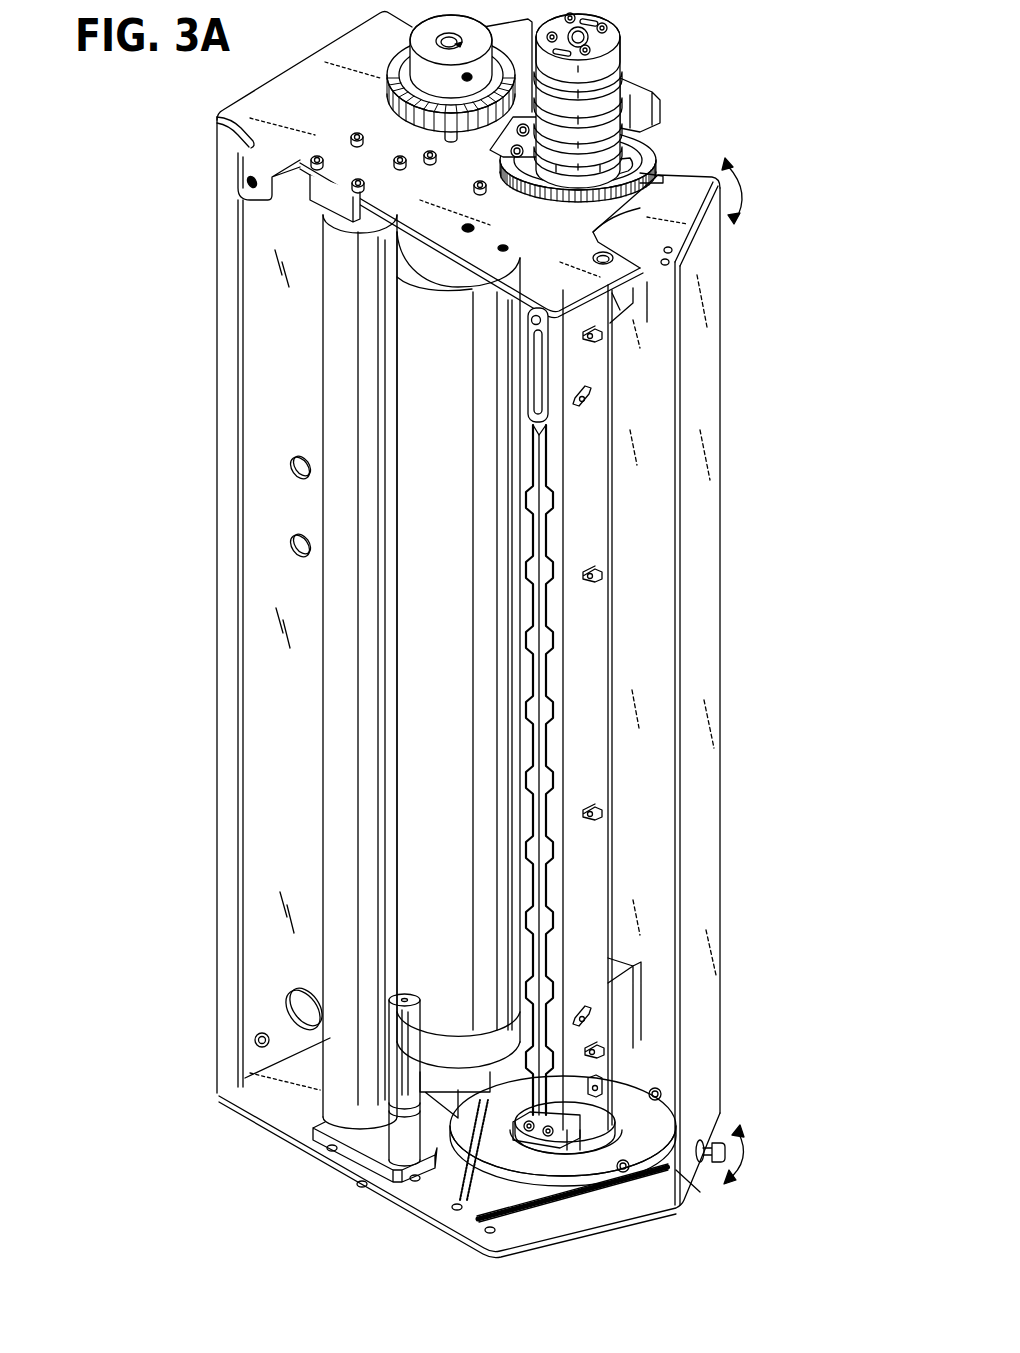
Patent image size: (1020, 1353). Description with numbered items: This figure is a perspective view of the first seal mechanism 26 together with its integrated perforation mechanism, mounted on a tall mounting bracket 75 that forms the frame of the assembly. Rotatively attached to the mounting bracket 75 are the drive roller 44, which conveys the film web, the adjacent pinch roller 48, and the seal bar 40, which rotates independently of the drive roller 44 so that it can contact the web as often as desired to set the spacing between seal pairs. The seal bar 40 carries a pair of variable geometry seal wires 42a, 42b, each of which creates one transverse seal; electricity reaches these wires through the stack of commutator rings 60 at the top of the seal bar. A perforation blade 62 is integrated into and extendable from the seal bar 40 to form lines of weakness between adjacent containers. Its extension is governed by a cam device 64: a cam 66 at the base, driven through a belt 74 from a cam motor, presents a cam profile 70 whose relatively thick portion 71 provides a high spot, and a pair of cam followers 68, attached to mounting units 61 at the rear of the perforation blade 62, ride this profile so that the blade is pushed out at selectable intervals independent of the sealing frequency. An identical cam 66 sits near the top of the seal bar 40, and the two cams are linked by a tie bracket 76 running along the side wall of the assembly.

The first seal mechanism 26 is at (605, 662).
The seal bar 40 is at (590, 857).
The variable geometry seal wire 42a is at (550, 505).
The variable geometry seal wire 42b is at (525, 632).
The drive roller 44 is at (450, 418).
The pinch roller 48 is at (345, 698).
The commutator rings 60 is at (623, 53).
The mounting units 61 is at (617, 323).
The perforation blade 62 is at (540, 528).
The cam device 64 is at (655, 1175).
The cam 66 is at (630, 278).
The cam followers 68 is at (585, 1132).
The cam profile 70 is at (572, 1158).
The thick portion 71 is at (636, 1138).
The belt 74 is at (530, 1205).
The mounting bracket 75 is at (258, 112).
The tie bracket 76 is at (707, 836).